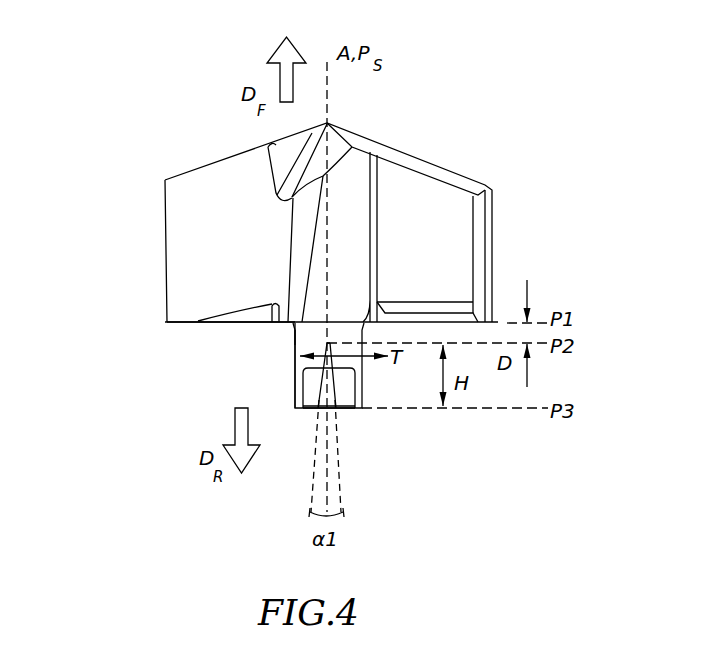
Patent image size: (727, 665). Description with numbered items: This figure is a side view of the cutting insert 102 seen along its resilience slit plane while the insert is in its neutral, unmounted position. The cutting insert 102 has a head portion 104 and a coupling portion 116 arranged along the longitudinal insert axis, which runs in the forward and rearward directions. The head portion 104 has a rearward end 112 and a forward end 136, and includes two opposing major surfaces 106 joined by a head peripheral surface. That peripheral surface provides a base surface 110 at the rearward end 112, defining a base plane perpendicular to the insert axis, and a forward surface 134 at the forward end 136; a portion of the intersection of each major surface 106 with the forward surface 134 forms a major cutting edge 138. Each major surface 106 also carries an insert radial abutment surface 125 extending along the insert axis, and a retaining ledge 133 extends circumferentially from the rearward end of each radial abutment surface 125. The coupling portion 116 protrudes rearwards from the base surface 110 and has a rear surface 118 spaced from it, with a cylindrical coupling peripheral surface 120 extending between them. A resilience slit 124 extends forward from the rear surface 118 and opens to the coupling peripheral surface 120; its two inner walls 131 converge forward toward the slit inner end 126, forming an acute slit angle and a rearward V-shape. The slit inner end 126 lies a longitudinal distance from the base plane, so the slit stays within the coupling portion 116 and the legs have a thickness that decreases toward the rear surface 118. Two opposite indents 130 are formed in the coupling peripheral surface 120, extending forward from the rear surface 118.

The cutting insert 102 is at (460, 60).
The head portion 104 is at (497, 136).
The major surfaces 106 is at (200, 240).
The base surface 110 is at (195, 327).
The rearward end 112 is at (191, 360).
The coupling portion 116 is at (216, 403).
The rear surface 118 is at (318, 412).
The coupling peripheral surface 120 is at (297, 375).
The resilience slit 124 is at (344, 396).
The insert radial abutment surface 125 is at (440, 237).
The slit inner end 126 is at (310, 357).
The indents 130 is at (338, 411).
The inner walls 131 is at (334, 412).
The retaining ledge 133 is at (454, 308).
The forward surface 134 is at (387, 147).
The forward end 136 is at (220, 135).
The major cutting edge 138 is at (210, 165).